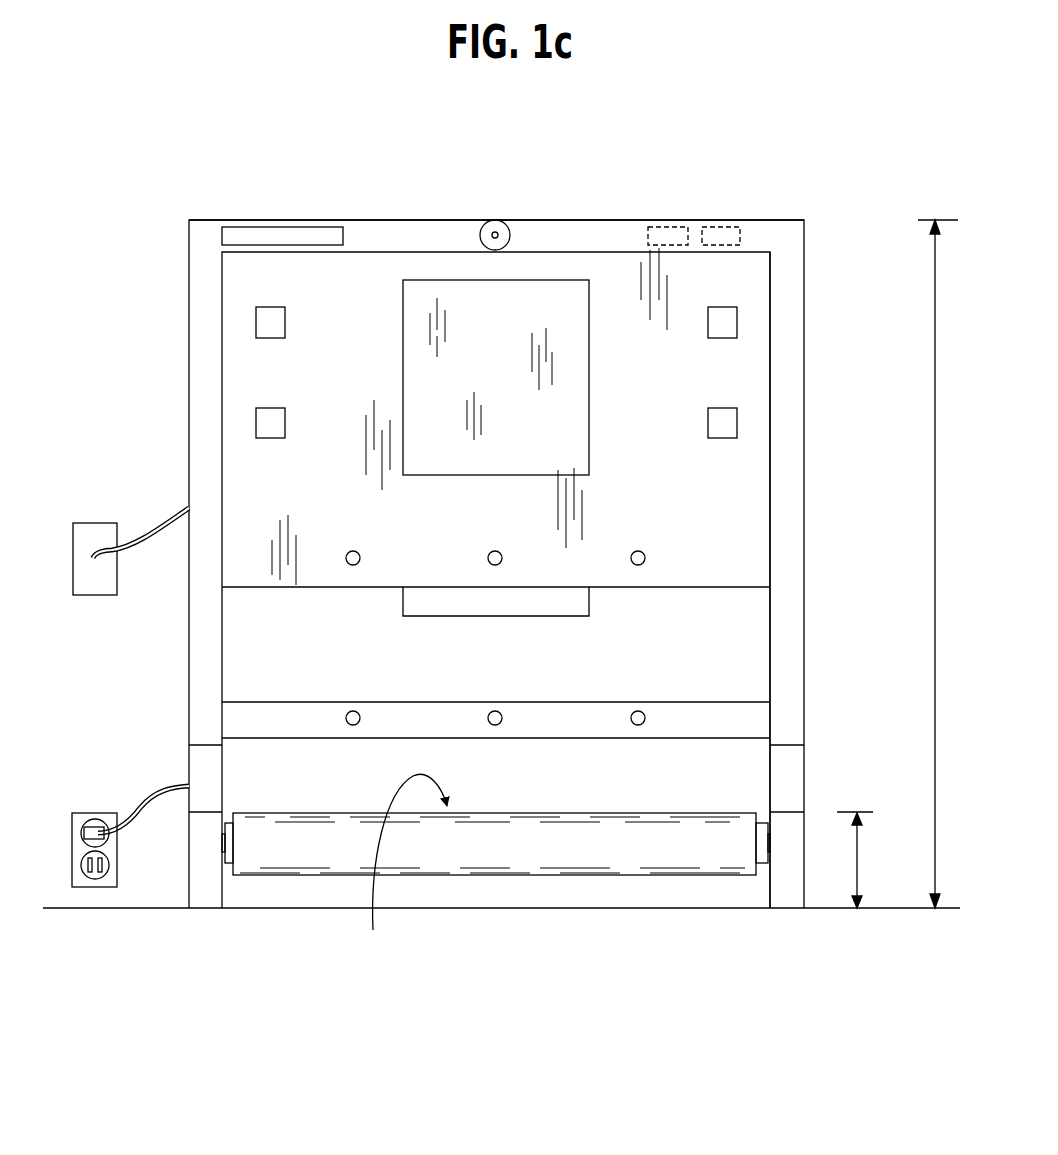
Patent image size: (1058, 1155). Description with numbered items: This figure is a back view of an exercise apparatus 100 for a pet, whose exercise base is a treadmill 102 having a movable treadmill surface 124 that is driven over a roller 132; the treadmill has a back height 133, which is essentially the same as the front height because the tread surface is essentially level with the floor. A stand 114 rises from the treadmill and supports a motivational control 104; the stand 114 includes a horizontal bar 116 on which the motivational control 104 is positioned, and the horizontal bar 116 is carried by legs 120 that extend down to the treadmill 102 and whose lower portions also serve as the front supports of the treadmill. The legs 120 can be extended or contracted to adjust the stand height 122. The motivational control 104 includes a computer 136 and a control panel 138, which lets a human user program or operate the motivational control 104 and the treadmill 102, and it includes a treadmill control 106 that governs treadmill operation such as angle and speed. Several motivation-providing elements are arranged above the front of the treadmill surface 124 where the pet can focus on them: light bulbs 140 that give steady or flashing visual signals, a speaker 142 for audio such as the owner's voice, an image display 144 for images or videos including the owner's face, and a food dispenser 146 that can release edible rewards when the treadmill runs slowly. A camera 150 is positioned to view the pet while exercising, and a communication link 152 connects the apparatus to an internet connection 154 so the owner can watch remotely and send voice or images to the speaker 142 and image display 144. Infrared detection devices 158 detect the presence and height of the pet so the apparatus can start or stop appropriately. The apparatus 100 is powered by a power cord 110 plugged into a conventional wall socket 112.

The exercise apparatus 100 is at (833, 157).
The treadmill 102 is at (693, 852).
The motivational control 104 is at (705, 220).
The treadmill control 106 is at (667, 227).
The power cord 110 is at (145, 795).
The wall socket 112 is at (100, 882).
The stand 114 is at (790, 500).
The horizontal bar 116 is at (377, 280).
The legs 120 is at (798, 753).
The stand height 122 is at (935, 643).
The treadmill surface 124 is at (398, 870).
The front roller 132 is at (572, 852).
The back height 133 is at (879, 846).
The computer 136 is at (728, 227).
The control panel 138 is at (275, 235).
The light bulbs 140 is at (267, 323).
The speaker 142 is at (267, 422).
The image display 144 is at (568, 370).
The food dispenser 146 is at (405, 598).
The camera 150 is at (485, 220).
The communication link 152 is at (150, 543).
The internet connection 154 is at (90, 528).
The infrared detection devices 158 is at (632, 552).